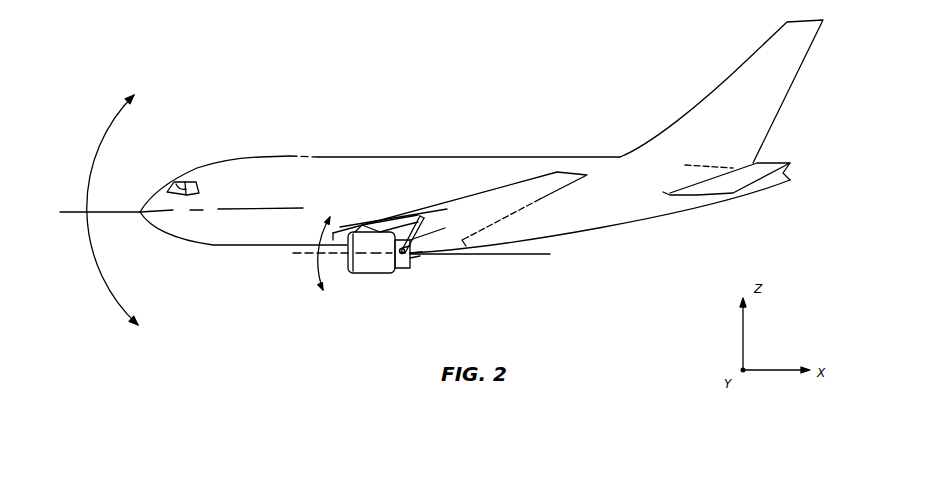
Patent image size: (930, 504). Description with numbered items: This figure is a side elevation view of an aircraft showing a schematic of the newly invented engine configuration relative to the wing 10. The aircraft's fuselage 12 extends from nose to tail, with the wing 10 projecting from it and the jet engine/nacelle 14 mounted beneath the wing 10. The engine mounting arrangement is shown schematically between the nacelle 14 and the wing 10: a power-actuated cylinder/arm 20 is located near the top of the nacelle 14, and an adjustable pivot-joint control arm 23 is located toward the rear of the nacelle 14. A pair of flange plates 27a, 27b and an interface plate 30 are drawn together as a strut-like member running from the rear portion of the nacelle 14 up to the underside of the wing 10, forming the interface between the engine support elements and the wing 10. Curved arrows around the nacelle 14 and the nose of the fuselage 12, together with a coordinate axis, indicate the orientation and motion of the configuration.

The wing 10 is at (510, 202).
The fuselage 12 is at (260, 223).
The jet engine/nacelle 14 is at (355, 275).
The power-actuated cylinder/arm 20 is at (380, 227).
The adjustable pivot-joint control arm 23 is at (420, 247).
The flange plate 27a is at (410, 234).
The flange plate 27b is at (414, 235).
The interface plate 30 is at (423, 217).